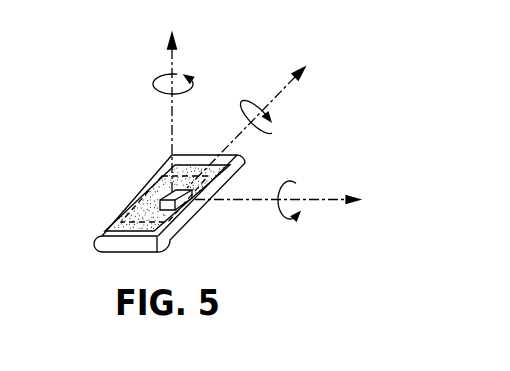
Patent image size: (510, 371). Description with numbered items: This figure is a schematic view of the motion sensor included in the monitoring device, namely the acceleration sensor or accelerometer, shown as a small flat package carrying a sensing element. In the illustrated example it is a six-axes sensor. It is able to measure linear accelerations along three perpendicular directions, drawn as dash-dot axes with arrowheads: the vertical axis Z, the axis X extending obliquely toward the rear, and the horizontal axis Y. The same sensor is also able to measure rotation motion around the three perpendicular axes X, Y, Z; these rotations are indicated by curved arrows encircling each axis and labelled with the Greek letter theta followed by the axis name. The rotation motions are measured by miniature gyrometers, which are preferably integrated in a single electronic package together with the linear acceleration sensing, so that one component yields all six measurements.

The X direction/axis X is at (254, 127).
The Y direction/axis Y is at (277, 212).
The Z direction/axis Z is at (173, 100).